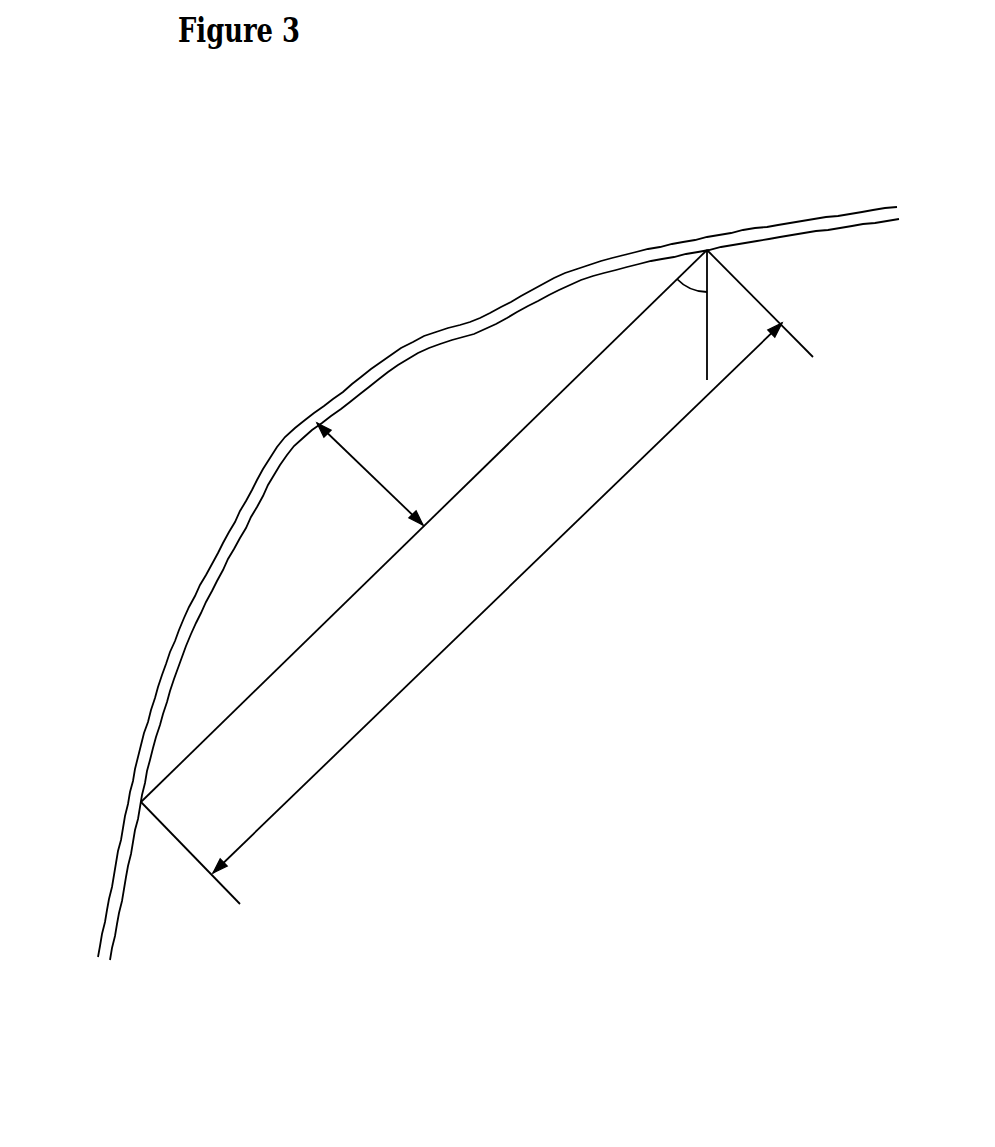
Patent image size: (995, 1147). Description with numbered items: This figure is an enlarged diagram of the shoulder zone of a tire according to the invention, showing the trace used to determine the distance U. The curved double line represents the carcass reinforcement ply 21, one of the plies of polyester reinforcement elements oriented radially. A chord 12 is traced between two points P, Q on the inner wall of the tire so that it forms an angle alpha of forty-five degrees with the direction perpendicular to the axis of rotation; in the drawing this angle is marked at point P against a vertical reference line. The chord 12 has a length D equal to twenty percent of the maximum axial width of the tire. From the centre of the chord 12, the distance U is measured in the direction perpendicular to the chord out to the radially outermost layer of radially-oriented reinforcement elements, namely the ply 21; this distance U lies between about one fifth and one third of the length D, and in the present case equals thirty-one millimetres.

The ply 21 is at (282, 460).
The chord 12 is at (302, 643).
The point P is at (707, 250).
The point Q is at (141, 800).
The length D is at (497, 598).
The distance U is at (370, 474).